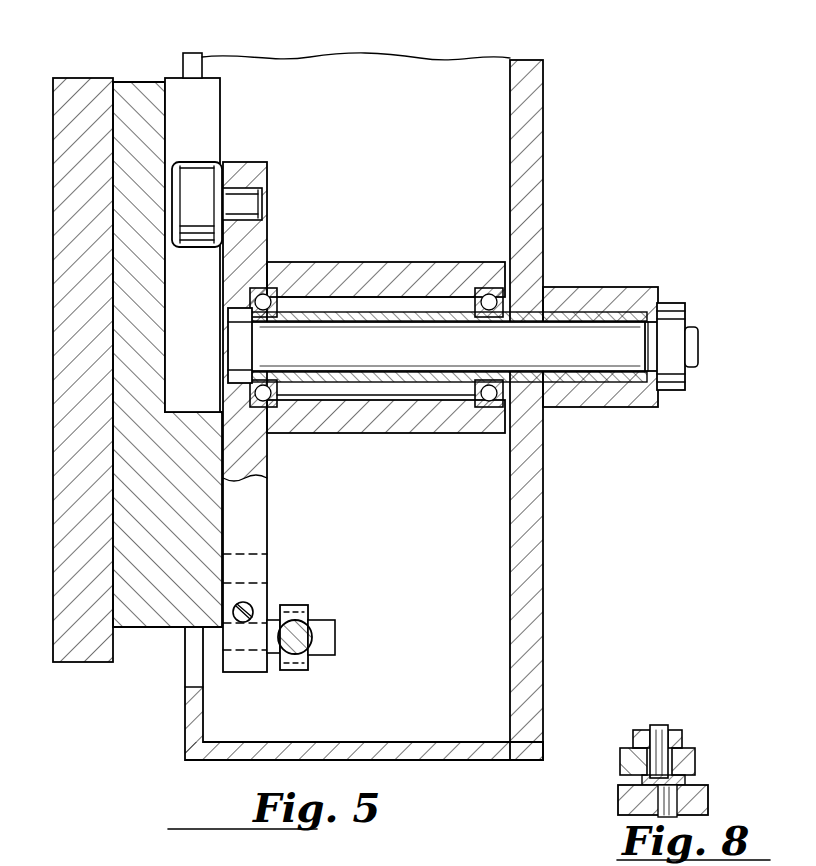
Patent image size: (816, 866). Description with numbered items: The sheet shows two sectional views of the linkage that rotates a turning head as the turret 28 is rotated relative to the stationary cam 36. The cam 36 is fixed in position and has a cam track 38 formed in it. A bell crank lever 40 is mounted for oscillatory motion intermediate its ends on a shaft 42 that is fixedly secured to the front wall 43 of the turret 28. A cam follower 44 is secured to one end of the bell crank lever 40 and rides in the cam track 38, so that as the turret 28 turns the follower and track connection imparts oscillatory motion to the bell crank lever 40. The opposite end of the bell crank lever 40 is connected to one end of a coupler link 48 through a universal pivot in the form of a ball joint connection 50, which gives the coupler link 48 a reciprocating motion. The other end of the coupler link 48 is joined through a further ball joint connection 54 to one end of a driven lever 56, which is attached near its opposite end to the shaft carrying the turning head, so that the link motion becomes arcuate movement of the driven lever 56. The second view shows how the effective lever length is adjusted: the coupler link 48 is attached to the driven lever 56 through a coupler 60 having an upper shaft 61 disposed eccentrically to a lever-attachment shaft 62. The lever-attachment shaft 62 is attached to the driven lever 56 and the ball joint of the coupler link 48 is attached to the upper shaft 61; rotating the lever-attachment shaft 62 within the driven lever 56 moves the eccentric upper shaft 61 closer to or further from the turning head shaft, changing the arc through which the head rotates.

In FIG. 5, the turret 28 is at (312, 750).
In FIG. 5, the stationary cam 36 is at (168, 596).
In FIG. 5, the cam track 38 is at (205, 107).
In FIG. 5, the bell crank lever 40 is at (250, 247).
In FIG. 5, the shaft 42 is at (240, 342).
In FIG. 5, the front wall 43 is at (528, 190).
In FIG. 5, the cam follower 44 is at (190, 186).
In FIG. 5, the coupler link 48 is at (300, 637).
In FIG. 8, the coupler link 48 is at (688, 752).
In FIG. 5, the ball joint connection 50 is at (310, 618).
In FIG. 8, the ball joint connection 54 is at (630, 752).
In FIG. 8, the driven lever 56 is at (636, 803).
In FIG. 8, the coupler 60 is at (694, 779).
In FIG. 8, the upper shaft 61 is at (658, 752).
In FIG. 8, the lever-attachment shaft 62 is at (680, 797).